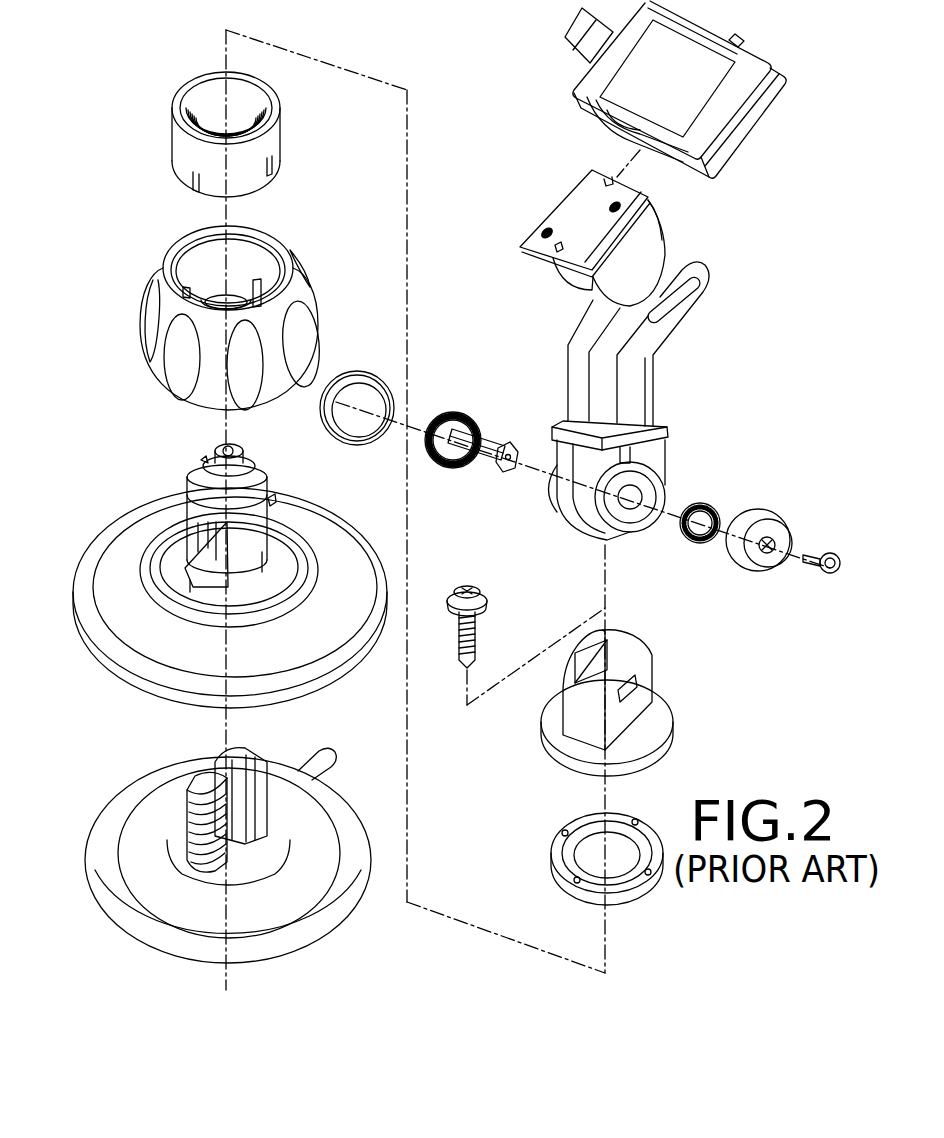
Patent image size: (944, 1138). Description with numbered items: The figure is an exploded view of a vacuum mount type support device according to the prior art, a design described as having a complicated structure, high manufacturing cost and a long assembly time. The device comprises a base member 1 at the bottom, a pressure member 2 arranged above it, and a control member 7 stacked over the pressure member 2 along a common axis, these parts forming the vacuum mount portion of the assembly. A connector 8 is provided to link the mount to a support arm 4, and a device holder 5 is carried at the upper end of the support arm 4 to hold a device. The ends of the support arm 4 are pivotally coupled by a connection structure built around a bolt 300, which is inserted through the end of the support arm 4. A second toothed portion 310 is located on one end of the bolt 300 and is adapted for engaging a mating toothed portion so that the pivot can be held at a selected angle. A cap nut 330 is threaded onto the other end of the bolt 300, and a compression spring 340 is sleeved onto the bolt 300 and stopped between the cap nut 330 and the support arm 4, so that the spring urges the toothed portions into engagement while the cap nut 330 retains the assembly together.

The base member 1 is at (148, 815).
The pressure member 2 is at (120, 563).
The support arm 4 is at (583, 357).
The device holder 5 is at (610, 68).
The control member 7 is at (143, 195).
The connector 8 is at (652, 728).
The bolt 300 is at (477, 463).
The second toothed portion 310 is at (455, 410).
The cap nut 330 is at (743, 522).
The compression spring 340 is at (693, 545).